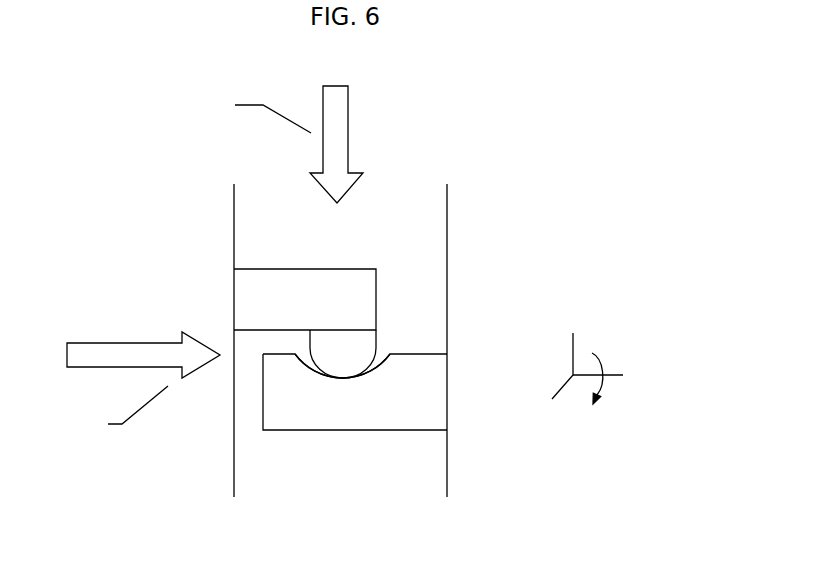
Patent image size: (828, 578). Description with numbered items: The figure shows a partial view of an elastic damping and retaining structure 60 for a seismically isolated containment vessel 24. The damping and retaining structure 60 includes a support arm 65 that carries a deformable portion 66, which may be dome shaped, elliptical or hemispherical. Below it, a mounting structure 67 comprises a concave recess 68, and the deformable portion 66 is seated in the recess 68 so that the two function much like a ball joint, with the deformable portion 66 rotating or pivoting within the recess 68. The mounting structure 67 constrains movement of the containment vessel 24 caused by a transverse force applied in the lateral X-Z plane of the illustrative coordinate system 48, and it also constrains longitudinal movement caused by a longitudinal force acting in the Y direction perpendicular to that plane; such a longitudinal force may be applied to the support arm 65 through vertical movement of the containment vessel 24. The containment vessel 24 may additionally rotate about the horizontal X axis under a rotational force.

The containment vessel 24 is at (228, 215).
The elastic damping and retaining structure 60 is at (435, 127).
The support arm 65 is at (313, 257).
The deformable portion 66 is at (378, 343).
The mounting structure 67 is at (380, 436).
The recess 68 is at (375, 385).
The coordinate system 48 is at (623, 322).